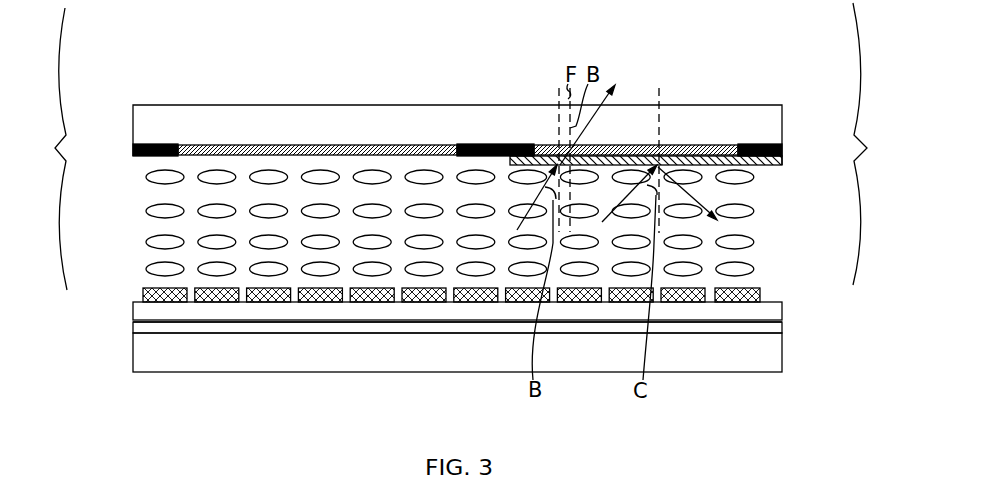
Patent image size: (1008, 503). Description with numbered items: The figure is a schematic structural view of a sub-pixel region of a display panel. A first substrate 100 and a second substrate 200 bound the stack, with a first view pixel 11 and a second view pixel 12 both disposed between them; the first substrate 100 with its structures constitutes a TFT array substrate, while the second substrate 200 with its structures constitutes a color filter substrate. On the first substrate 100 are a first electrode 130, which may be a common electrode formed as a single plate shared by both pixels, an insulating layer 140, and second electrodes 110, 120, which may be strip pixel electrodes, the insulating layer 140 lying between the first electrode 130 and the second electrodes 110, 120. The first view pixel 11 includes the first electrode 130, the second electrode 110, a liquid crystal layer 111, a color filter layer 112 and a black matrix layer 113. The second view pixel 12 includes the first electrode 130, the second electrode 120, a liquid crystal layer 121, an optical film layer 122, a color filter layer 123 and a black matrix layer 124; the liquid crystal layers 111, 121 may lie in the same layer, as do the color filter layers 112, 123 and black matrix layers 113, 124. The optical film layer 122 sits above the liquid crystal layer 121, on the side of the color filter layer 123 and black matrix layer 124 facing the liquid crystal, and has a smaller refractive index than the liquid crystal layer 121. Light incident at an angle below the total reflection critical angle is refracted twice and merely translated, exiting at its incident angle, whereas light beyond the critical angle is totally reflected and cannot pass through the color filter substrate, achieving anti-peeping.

The first substrate 100 is at (753, 347).
The second electrode 110 is at (151, 288).
The liquid crystal layer 111 is at (166, 243).
The color filter layer 112 is at (183, 143).
The black matrix layer 113 is at (150, 143).
The second electrode 120 is at (761, 292).
The liquid crystal layer 121 is at (755, 242).
The optical film layer 122 is at (838, 114).
The color filter layer 123 is at (727, 148).
The black matrix layer 124 is at (763, 148).
The first electrode 130 is at (773, 323).
The insulating layer 140 is at (155, 311).
The second substrate 200 is at (312, 124).
The first view pixel 11 is at (44, 149).
The second view pixel 12 is at (877, 144).